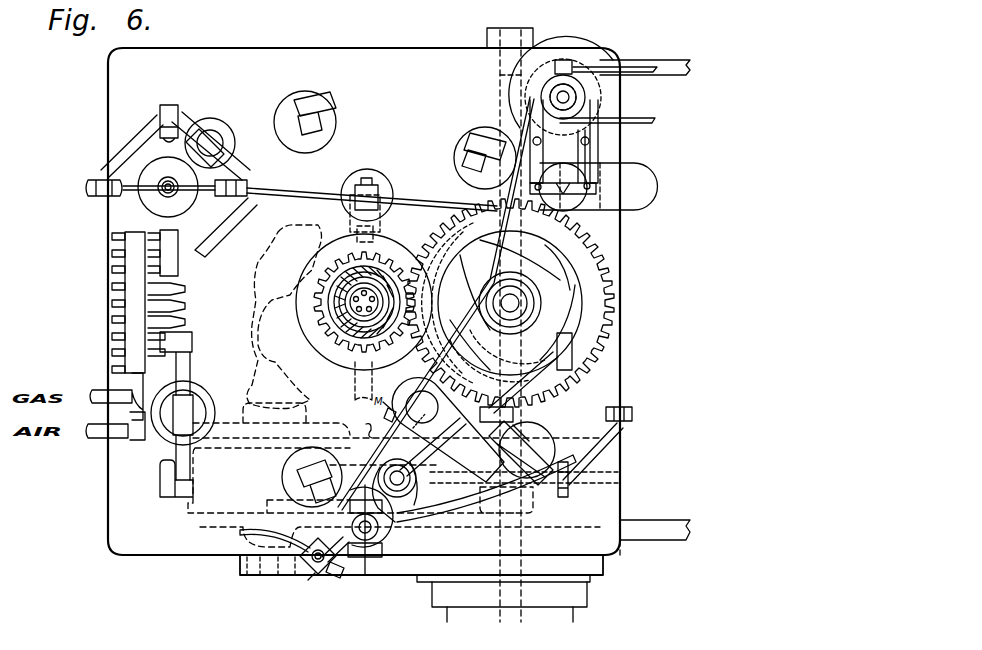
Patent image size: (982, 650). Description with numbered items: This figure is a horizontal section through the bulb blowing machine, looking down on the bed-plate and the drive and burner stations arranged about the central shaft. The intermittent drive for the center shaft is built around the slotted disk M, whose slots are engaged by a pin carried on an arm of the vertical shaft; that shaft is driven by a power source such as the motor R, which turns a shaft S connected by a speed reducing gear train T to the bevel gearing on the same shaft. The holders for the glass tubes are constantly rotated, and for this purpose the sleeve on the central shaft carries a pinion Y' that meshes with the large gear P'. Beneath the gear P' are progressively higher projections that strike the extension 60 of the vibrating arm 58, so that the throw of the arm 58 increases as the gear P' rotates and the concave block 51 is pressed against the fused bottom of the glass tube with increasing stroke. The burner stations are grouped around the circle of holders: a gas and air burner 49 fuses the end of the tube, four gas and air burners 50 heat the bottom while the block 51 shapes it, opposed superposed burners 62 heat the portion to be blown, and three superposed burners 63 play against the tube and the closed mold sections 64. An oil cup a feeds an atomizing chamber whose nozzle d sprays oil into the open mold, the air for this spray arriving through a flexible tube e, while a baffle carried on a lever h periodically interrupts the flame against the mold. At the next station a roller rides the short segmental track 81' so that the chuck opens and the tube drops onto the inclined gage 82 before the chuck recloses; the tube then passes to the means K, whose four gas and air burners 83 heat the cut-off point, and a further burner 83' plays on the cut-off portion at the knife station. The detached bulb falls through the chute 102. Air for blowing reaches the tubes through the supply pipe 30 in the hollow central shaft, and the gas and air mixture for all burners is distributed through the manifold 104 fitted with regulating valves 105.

The supply pipe 30 is at (364, 302).
The gas and air burner 49 is at (314, 94).
The gas and air burners 50 is at (98, 175).
The block 51 is at (158, 190).
The arm 58 is at (292, 196).
The extension 60 is at (432, 201).
The gas and air burners 62 is at (160, 480).
The gas and air burners 63 is at (290, 480).
The mold sections 64 is at (360, 562).
The segmental track 81' is at (438, 450).
The gage 82 is at (458, 522).
The gas and air burners 83 is at (619, 477).
The burner 83' is at (478, 150).
The chute 102 is at (657, 186).
The manifold 104 is at (130, 308).
The regulating valves 105 is at (112, 368).
The gear P' is at (524, 310).
The pinion Y' is at (313, 235).
The disk M is at (265, 306).
The motor R is at (203, 527).
The shaft S is at (518, 532).
The speed reducing gear train T is at (618, 477).
The flexible tube e is at (240, 533).
The oil cup a is at (320, 568).
The nozzle d is at (330, 546).
The lever h is at (420, 381).
The means K is at (406, 396).
The hub i is at (558, 286).